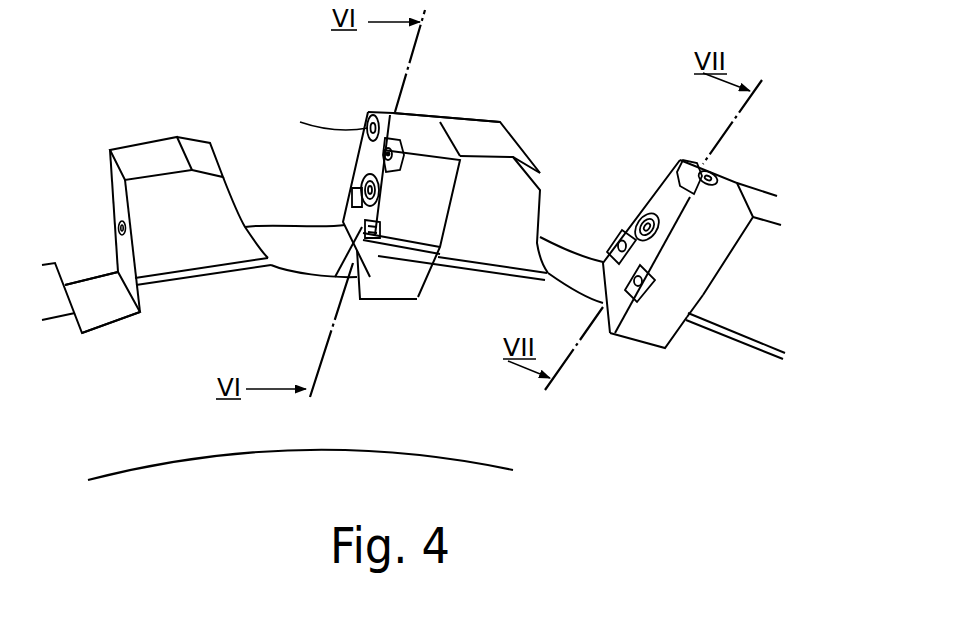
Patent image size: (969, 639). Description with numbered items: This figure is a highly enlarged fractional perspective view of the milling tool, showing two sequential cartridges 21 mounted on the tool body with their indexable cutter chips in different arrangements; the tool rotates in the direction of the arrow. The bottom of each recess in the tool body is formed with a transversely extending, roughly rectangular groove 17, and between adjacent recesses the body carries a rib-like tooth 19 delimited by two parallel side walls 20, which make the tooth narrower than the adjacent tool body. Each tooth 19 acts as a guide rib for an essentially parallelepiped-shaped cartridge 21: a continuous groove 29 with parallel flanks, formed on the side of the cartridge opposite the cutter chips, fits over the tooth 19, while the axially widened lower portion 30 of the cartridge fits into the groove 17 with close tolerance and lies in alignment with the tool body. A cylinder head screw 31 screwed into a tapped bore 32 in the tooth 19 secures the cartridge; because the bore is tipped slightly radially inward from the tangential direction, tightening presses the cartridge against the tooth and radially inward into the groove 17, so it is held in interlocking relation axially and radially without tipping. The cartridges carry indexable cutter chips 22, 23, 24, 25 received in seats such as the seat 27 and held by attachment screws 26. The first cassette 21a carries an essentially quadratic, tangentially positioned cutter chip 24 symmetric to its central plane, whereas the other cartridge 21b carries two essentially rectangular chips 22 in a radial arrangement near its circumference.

The groove 17 is at (112, 310).
The tooth 19 is at (143, 158).
The side walls 20 is at (478, 122).
The cartridge 21 is at (756, 241).
The first cassette 21a is at (718, 258).
The other cartridge 21b is at (440, 228).
The indexable cutter chip 22 is at (372, 112).
The indexable cutter chip 23 is at (352, 194).
The cutter chip 24 is at (722, 165).
The indexable cutter chip 25 is at (622, 228).
The attachment screw 26 is at (593, 393).
The seat 27 is at (398, 112).
The groove 29 is at (450, 118).
The lower portion 30 is at (387, 287).
The cylinder head screw 31 is at (652, 204).
The tapped bore 32 is at (112, 227).